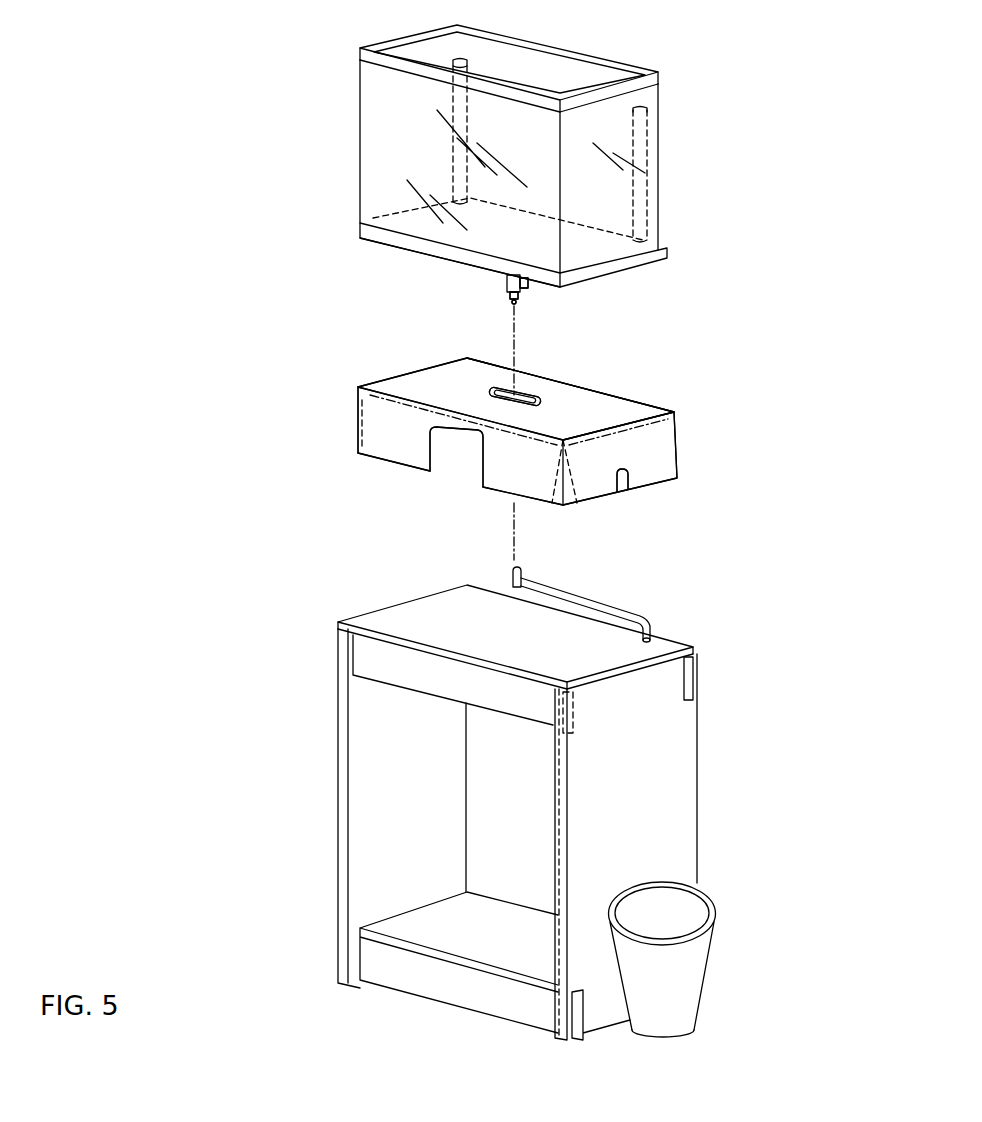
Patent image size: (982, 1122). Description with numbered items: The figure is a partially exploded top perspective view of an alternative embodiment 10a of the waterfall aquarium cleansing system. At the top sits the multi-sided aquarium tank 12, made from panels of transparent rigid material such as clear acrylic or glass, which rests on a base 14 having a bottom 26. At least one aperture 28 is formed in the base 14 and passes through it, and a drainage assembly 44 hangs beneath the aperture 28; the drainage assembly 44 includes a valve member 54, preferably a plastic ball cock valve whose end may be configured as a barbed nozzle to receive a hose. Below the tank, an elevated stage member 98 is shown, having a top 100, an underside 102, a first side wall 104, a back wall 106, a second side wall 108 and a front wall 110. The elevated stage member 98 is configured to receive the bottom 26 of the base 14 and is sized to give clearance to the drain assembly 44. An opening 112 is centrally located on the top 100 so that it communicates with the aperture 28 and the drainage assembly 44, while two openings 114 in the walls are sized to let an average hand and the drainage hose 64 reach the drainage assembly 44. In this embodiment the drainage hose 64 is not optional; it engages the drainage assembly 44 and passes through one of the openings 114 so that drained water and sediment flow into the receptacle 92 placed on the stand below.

The alternative embodiment 10a is at (158, 332).
The aquarium tank 12 is at (373, 142).
The base 14 is at (360, 228).
The bottom 26 is at (373, 242).
The aperture 28 is at (517, 303).
The drainage assembly 44 is at (466, 281).
The valve member 54 is at (528, 285).
The drainage hose 64 is at (521, 574).
The receptacle 92 is at (692, 982).
The elevated stage member 98 is at (385, 378).
The top 100 is at (418, 380).
The underside 102 is at (492, 392).
The first side wall 104 is at (357, 433).
The back wall 106 is at (648, 404).
The second side wall 108 is at (657, 452).
The front wall 110 is at (388, 453).
The opening 112 is at (540, 402).
The openings 114 is at (453, 465).